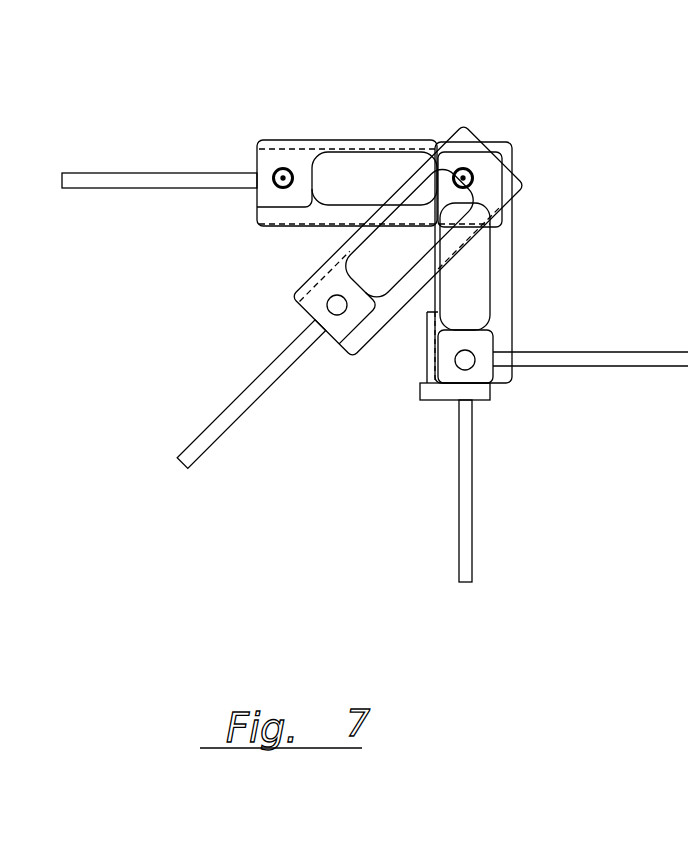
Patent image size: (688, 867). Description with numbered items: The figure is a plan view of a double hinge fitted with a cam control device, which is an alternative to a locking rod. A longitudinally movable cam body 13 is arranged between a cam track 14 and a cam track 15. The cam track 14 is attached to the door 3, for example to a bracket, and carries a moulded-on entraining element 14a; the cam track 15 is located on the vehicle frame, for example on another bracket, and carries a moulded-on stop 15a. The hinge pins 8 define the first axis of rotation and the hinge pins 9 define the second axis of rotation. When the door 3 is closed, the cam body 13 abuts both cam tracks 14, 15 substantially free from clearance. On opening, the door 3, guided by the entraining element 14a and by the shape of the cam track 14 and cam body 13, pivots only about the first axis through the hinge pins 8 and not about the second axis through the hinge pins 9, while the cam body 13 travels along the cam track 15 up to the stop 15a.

The door 3 is at (123, 183).
The hinge pin 8 is at (468, 176).
The hinge pin 9 is at (283, 175).
The cam body 13 is at (358, 172).
The cam track 14 is at (309, 163).
The entraining element 14a is at (321, 145).
The cam track 15 is at (452, 165).
The stop 15a is at (495, 203).